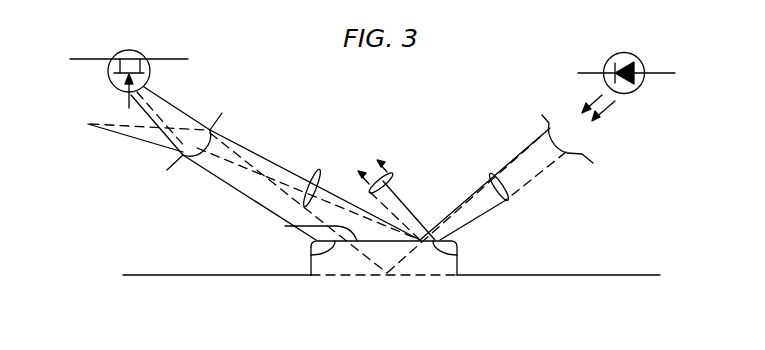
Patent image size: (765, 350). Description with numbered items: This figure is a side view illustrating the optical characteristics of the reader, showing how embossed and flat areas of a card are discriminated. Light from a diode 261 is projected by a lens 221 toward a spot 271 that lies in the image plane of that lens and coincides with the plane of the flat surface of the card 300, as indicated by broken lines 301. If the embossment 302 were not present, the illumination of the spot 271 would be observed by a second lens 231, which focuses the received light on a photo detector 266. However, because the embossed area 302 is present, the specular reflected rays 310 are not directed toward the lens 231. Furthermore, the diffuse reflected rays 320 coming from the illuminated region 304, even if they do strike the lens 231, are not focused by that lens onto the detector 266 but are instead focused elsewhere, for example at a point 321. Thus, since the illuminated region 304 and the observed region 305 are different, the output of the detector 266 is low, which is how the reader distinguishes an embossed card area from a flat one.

The photo detector 266 is at (118, 52).
The diode 261 is at (637, 56).
The lens 221 is at (548, 124).
The lens 231 is at (210, 131).
The broken lines 301 is at (509, 199).
The diffuse reflected rays 320 is at (318, 176).
The specular reflected rays 310 is at (394, 173).
The point 321 is at (88, 124).
The embossment 302 is at (285, 226).
The illuminated region 304 is at (457, 255).
The observed region 305 is at (311, 253).
The spot 271 is at (387, 276).
The card 300 is at (634, 275).